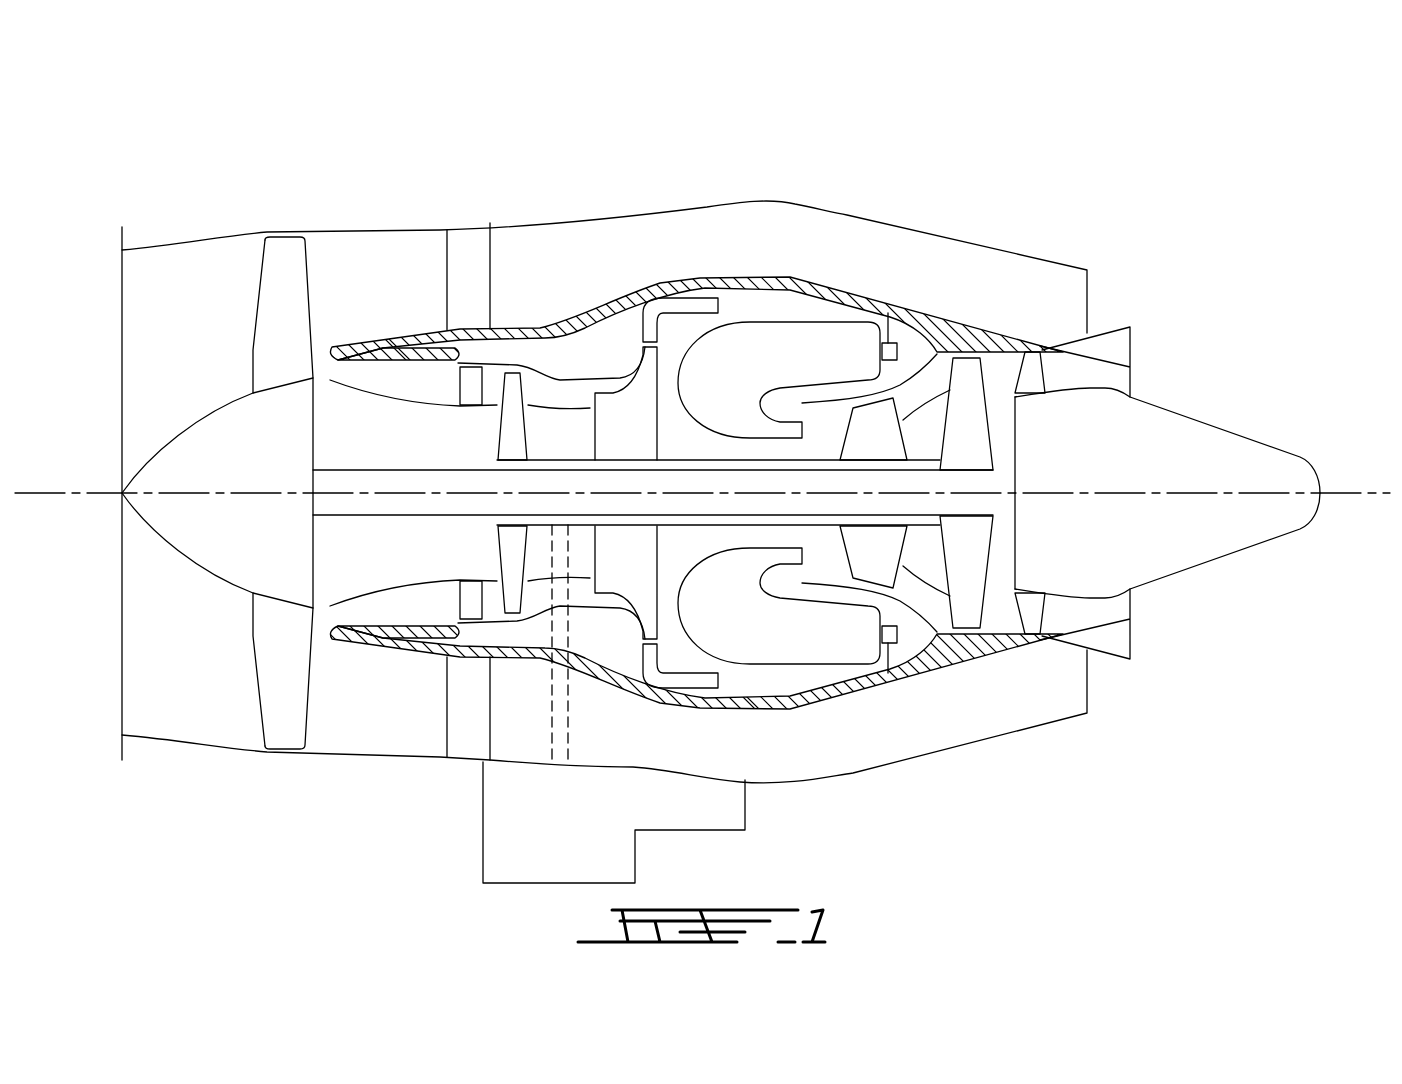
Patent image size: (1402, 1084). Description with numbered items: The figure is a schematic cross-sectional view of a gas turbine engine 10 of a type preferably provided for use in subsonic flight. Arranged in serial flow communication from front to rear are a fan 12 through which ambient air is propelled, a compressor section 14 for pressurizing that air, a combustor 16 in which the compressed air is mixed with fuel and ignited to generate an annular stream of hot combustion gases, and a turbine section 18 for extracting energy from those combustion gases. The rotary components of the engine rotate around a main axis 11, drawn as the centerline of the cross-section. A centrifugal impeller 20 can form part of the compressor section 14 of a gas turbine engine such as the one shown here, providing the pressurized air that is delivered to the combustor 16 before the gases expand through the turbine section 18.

The gas turbine engine 10 is at (940, 157).
The main axis 11 is at (1358, 493).
The fan 12 is at (287, 663).
The compressor section 14 is at (550, 387).
The combustor 16 is at (780, 343).
The turbine section 18 is at (922, 563).
The centrifugal impeller 20 is at (627, 410).